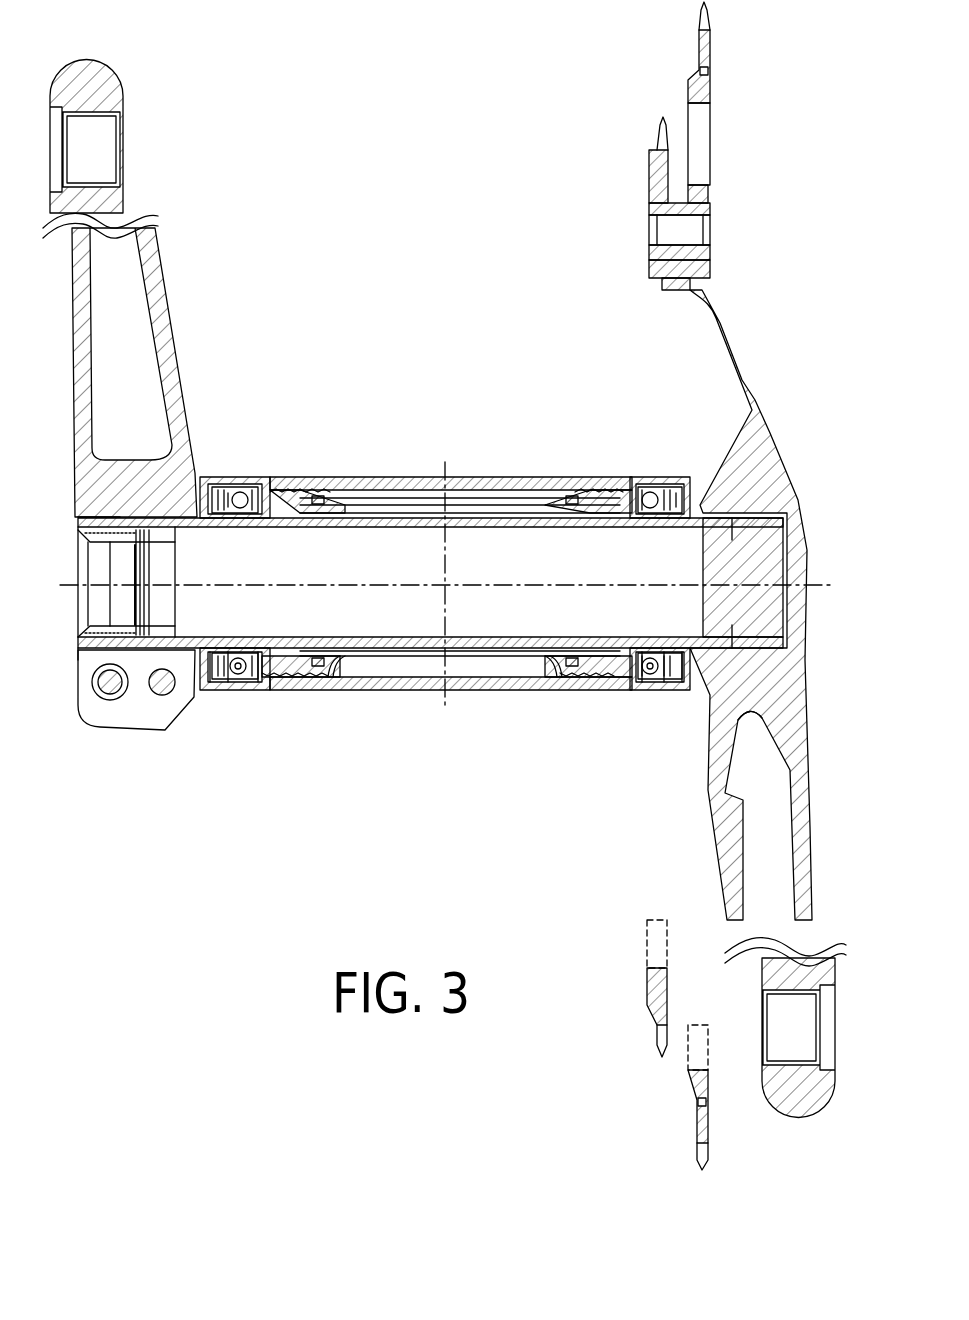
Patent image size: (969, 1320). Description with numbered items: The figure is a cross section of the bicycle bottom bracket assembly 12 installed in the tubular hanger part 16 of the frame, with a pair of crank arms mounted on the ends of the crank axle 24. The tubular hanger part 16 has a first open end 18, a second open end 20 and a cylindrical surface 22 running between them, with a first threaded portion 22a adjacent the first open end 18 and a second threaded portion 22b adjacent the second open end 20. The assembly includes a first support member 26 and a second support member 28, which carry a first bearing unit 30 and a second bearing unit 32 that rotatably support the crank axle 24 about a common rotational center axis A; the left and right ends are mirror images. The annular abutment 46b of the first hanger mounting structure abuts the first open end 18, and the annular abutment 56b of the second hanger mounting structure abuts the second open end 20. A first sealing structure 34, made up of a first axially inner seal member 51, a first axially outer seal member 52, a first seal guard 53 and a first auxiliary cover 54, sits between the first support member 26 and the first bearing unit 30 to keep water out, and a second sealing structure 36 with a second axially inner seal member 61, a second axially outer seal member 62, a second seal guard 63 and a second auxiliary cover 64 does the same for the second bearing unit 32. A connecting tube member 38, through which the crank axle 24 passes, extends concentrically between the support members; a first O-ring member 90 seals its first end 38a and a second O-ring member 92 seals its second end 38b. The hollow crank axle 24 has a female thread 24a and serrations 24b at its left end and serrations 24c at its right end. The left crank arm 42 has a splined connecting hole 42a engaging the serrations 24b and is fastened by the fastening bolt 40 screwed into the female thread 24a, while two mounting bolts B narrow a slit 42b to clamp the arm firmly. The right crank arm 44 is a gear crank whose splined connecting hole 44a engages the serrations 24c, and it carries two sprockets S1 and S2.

The bicycle bottom bracket assembly 12 is at (416, 498).
The tubular hanger part 16 is at (384, 474).
The first open end 18 is at (261, 480).
The second open end 20 is at (637, 478).
The cylindrical surface 22 is at (485, 497).
The first threaded portion 22a is at (299, 503).
The second threaded portion 22b is at (592, 500).
The crank axle 24 is at (430, 583).
The female thread 24a is at (140, 598).
The serrations 24b is at (112, 500).
The serrations 24c is at (770, 700).
The first support member 26 is at (243, 474).
The second support member 28 is at (651, 477).
The first bearing unit 30 is at (235, 690).
The second bearing unit 32 is at (648, 690).
The first sealing structure 34 is at (318, 587).
The second sealing structure 36 is at (736, 561).
The connecting tube member 38 is at (426, 660).
The first end 38a is at (350, 680).
The second end 38b is at (553, 680).
The fastening bolt 40 is at (74, 629).
The left crank arm 42 is at (166, 280).
The splined connecting hole 42a is at (107, 548).
The slit 42b is at (82, 668).
The right crank arm 44 is at (709, 849).
The splined connecting hole 44a is at (750, 515).
The annular abutment 46b is at (268, 690).
The first axially inner seal member 51 is at (262, 652).
The first axially outer seal member 52 is at (244, 655).
The first seal guard 53 is at (226, 652).
The first auxiliary cover 54 is at (208, 655).
The annular abutment 56b is at (615, 690).
The second axially inner seal member 61 is at (640, 654).
The second axially outer seal member 62 is at (650, 654).
The second seal guard 63 is at (666, 654).
The second auxiliary cover 64 is at (684, 654).
The first O-ring member 90 is at (319, 656).
The second O-ring member 92 is at (571, 656).
The rotational center axis A is at (481, 585).
The mounting bolts B is at (157, 695).
The sprocket S1 is at (648, 162).
The sprocket S2 is at (692, 78).